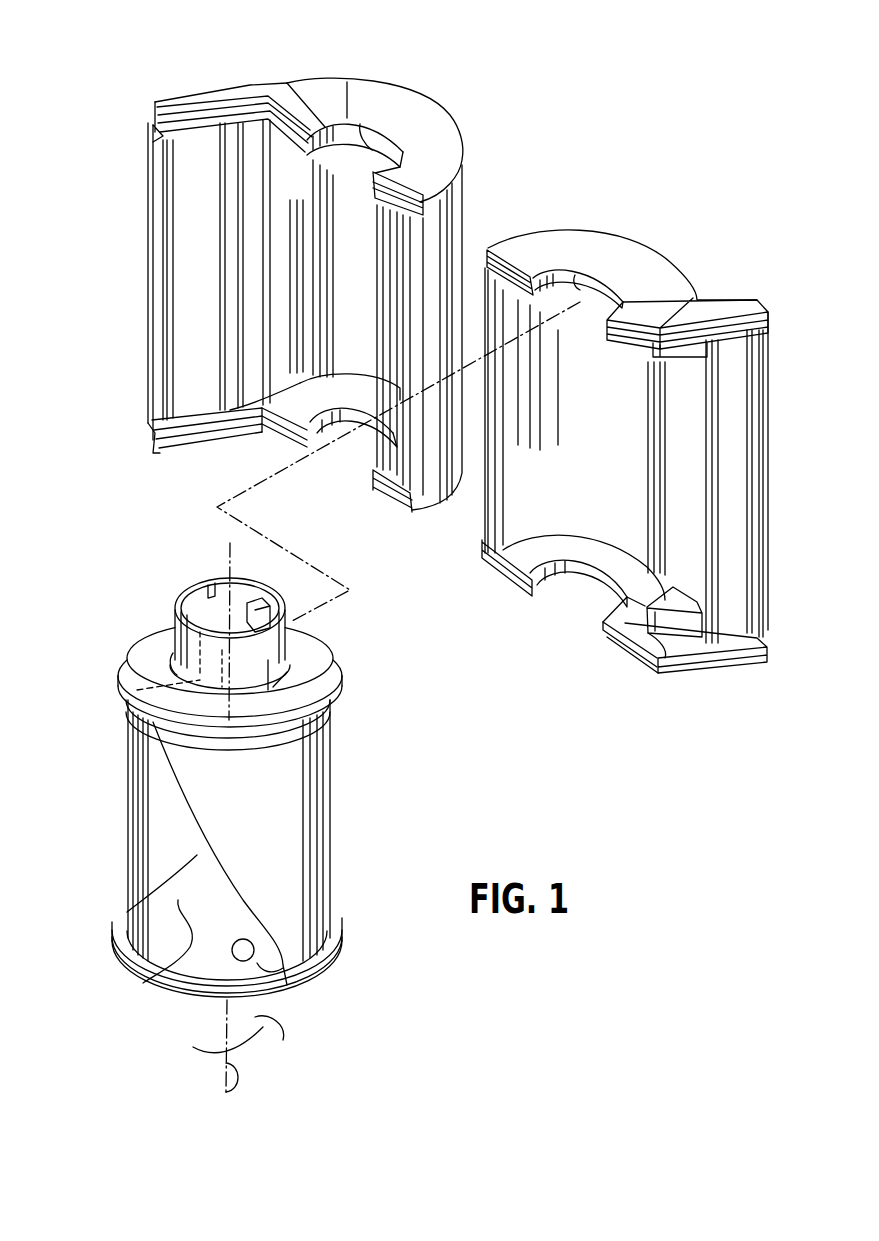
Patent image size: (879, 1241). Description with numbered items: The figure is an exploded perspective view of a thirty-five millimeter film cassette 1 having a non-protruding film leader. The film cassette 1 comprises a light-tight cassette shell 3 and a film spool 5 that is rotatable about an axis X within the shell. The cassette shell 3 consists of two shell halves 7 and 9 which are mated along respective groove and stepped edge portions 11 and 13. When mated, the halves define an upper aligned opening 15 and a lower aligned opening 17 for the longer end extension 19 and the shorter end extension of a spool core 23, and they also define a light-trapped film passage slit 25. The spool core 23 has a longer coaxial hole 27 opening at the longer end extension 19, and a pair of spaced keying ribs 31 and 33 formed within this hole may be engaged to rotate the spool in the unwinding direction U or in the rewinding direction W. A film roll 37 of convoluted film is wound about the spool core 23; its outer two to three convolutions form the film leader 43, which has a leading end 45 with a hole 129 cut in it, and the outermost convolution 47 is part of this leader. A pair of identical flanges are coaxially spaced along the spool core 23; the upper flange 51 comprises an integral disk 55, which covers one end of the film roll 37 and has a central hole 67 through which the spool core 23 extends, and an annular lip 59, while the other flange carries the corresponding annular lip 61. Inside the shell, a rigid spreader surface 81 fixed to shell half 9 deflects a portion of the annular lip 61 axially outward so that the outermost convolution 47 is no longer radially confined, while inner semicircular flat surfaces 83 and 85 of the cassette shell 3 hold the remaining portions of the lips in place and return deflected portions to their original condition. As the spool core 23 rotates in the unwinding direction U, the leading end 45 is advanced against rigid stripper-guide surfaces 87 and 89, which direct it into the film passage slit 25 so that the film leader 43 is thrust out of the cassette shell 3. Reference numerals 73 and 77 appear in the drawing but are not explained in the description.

The film cassette 1 is at (257, 67).
The cassette shell 3 is at (550, 226).
The film spool 5 is at (337, 814).
The shell half 7 is at (400, 92).
The shell half 9 is at (641, 250).
The groove and stepped edge portion 11 is at (163, 140).
The groove and stepped edge portion 13 is at (486, 260).
The upper aligned opening 15 is at (368, 152).
The lower aligned opening 17 is at (603, 287).
The longer end extension 19 is at (175, 600).
The spool core 23 is at (273, 687).
The film passage slit 25 is at (180, 297).
The longer coaxial hole 27 is at (213, 585).
The keying rib 31 is at (250, 598).
The keying rib 33 is at (112, 687).
The film roll 37 is at (135, 790).
The film leader 43 is at (158, 980).
The leading end 45 is at (252, 930).
The outermost convolution 47 is at (187, 833).
The flange 51 is at (345, 695).
The disk 55 is at (143, 660).
The annular lip 59 is at (300, 715).
The annular lip 61 is at (167, 990).
The central hole 67 is at (177, 650).
The inner surface of shell 73 is at (365, 283).
The end ring 77 is at (118, 700).
The spreader surface 81 is at (675, 635).
The inner semicircular flat surface 83 is at (398, 158).
The inner semicircular flat surface 85 is at (340, 393).
The stripper-guide surface 87 is at (687, 357).
The stripper-guide surface 89 is at (663, 620).
The hole 129 is at (282, 977).
The rewinding direction W is at (190, 1039).
The unwinding direction U is at (247, 1017).
The axis X is at (226, 1090).